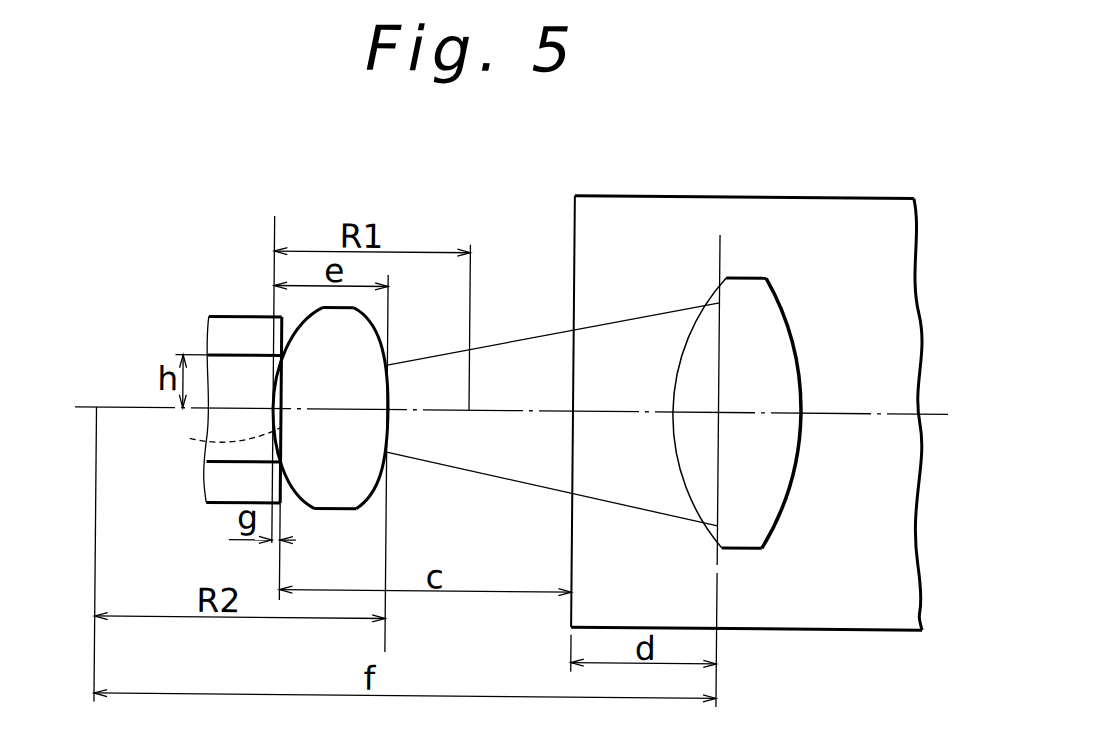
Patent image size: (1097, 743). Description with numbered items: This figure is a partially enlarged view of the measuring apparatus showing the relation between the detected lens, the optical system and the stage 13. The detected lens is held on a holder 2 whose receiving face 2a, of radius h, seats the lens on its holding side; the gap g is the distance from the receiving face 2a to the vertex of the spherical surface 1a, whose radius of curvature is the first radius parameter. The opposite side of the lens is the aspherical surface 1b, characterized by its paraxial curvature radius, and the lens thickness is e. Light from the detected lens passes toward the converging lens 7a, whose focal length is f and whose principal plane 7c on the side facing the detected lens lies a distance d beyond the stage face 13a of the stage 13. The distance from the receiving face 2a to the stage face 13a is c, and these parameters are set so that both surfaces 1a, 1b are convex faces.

The lens holder 2 is at (238, 330).
The receiving face 2a is at (216, 439).
The spherical surface 1a is at (290, 494).
The aspherical surface 1b is at (372, 490).
The converging lens 7a is at (688, 356).
The principal plane 7c is at (718, 250).
The stage 13 is at (801, 612).
The stage face 13a is at (572, 533).